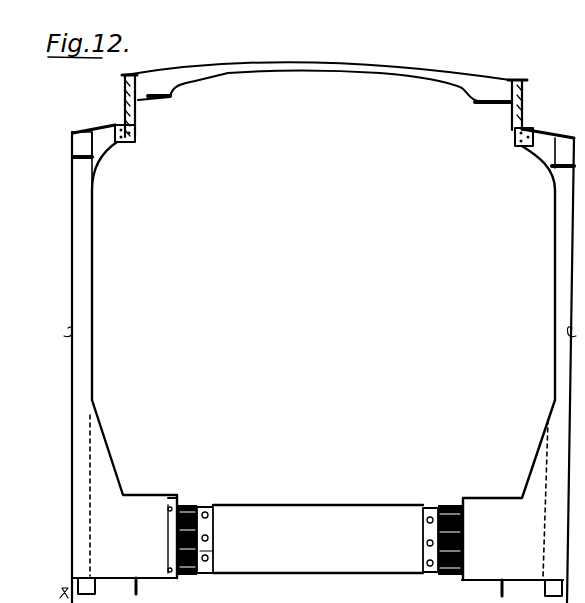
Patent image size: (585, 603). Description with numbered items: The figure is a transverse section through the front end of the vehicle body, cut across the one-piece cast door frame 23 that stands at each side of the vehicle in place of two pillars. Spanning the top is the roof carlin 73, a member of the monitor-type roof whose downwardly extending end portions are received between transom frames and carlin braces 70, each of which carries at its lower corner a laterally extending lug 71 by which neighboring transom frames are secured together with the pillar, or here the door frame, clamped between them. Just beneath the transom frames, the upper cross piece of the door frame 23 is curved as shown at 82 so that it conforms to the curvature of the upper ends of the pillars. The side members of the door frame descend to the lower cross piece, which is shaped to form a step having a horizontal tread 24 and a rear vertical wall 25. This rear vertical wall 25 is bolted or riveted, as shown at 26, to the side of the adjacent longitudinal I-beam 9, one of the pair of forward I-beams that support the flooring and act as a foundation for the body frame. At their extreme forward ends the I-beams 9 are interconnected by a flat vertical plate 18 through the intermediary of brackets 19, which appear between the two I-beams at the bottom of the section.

The longitudinal I-beam 9 is at (212, 514).
The flat vertical plate 18 is at (307, 515).
The bracket 19 is at (213, 551).
The door frame 23 is at (89, 350).
The tread 24 is at (104, 577).
The rear vertical wall 25 is at (173, 510).
The fastening 26 is at (176, 550).
The transom frame and carlin brace 70 is at (129, 97).
The laterally extending lug 71 is at (128, 143).
The roof carlin 73 is at (279, 71).
The curved part of upper cross piece 82 is at (104, 125).